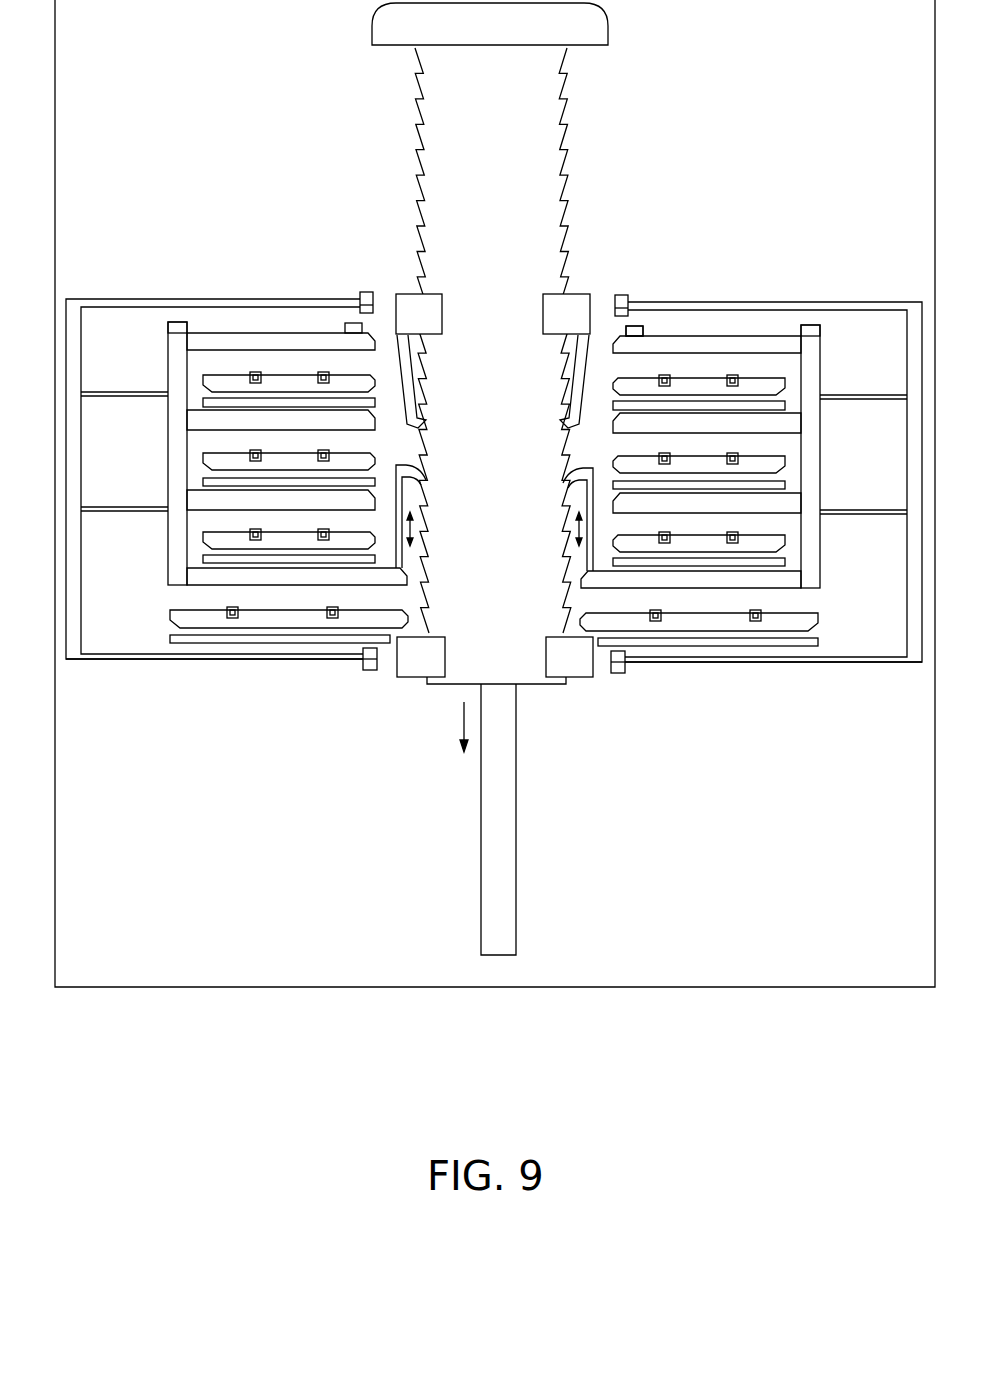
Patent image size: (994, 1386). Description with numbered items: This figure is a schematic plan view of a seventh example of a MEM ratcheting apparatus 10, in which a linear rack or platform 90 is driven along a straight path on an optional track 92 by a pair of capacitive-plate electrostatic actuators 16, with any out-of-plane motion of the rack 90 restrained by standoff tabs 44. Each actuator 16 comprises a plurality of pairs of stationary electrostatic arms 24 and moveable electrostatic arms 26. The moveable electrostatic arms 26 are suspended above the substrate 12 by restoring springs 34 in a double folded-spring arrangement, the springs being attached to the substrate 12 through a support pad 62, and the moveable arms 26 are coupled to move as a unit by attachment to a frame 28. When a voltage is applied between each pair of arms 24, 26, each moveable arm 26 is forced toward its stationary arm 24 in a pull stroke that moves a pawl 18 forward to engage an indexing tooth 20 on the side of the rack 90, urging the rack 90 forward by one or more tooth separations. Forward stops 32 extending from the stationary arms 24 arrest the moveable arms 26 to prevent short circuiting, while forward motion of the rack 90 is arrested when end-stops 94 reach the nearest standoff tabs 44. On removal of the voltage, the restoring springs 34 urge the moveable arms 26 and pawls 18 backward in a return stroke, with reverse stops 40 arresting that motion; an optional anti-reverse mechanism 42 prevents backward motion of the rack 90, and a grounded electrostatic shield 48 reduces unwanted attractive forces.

The positioning device 10 is at (552, 1012).
The substrate 12 is at (883, 50).
The electrostatic actuator 16 is at (233, 690).
The pawl 18 is at (566, 478).
The indexing teeth 20 is at (560, 206).
The stationary electrostatic arm 24 is at (170, 620).
The moveable electrostatic arm 26 is at (205, 333).
The frame 28 is at (168, 550).
The forward stops 32 is at (332, 609).
The restoring springs 34 is at (233, 298).
The reverse stops 40 is at (800, 330).
The anti-reverse mechanism 42 is at (566, 420).
The standoff tabs 44 is at (433, 328).
The electrostatic shield 48 is at (612, 407).
The support pad 62 is at (368, 292).
The rack 90 is at (508, 618).
The track 92 is at (516, 812).
The end-stops 94 is at (590, 47).